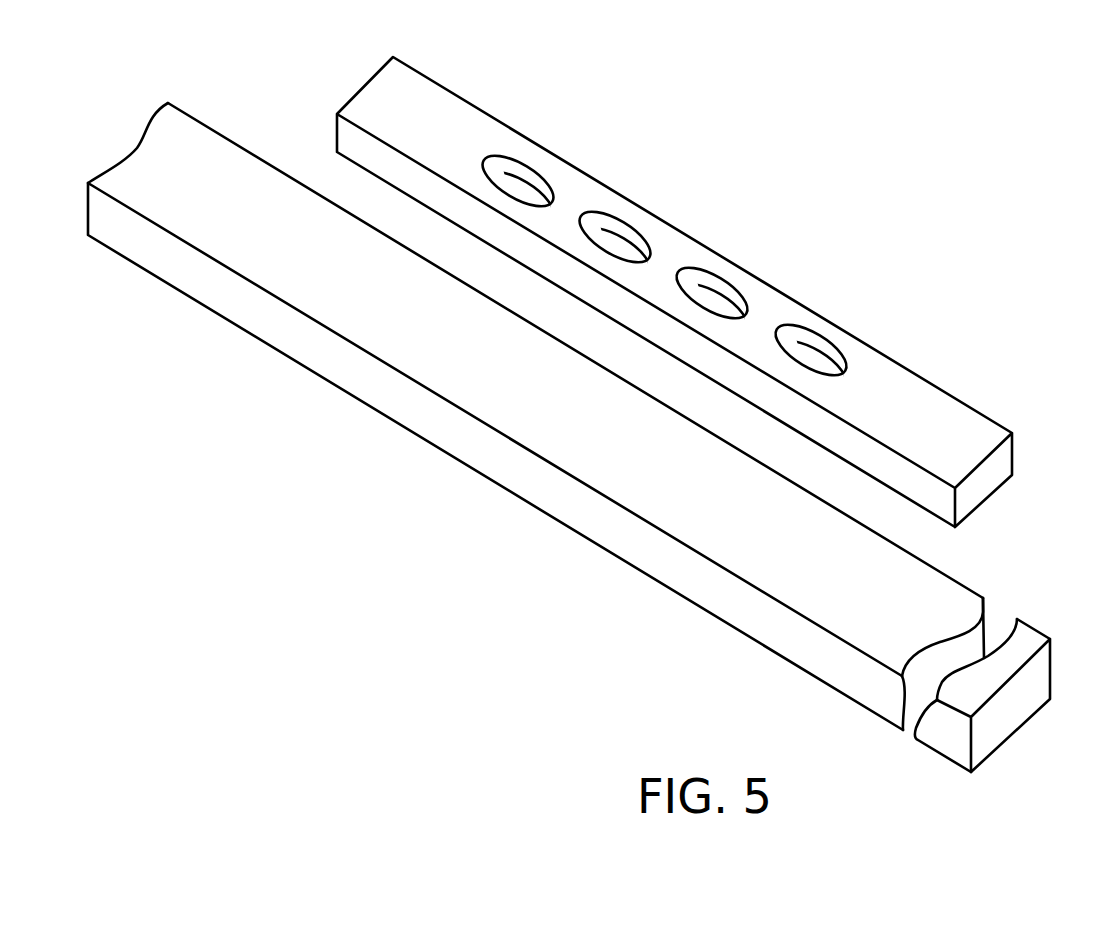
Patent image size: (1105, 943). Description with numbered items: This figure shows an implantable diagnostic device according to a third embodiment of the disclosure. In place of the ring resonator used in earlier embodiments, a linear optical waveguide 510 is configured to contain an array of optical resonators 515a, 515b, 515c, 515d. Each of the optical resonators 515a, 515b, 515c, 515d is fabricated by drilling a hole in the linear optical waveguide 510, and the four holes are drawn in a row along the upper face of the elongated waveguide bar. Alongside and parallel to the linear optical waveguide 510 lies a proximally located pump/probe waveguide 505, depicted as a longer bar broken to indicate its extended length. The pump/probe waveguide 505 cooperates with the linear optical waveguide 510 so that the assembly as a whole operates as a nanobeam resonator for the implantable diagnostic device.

The pump/probe waveguide 505 is at (188, 112).
The linear optical waveguide 510 is at (430, 77).
The optical resonator 515a is at (515, 183).
The optical resonator 515b is at (610, 238).
The optical resonator 515c is at (707, 293).
The optical resonator 515d is at (800, 348).